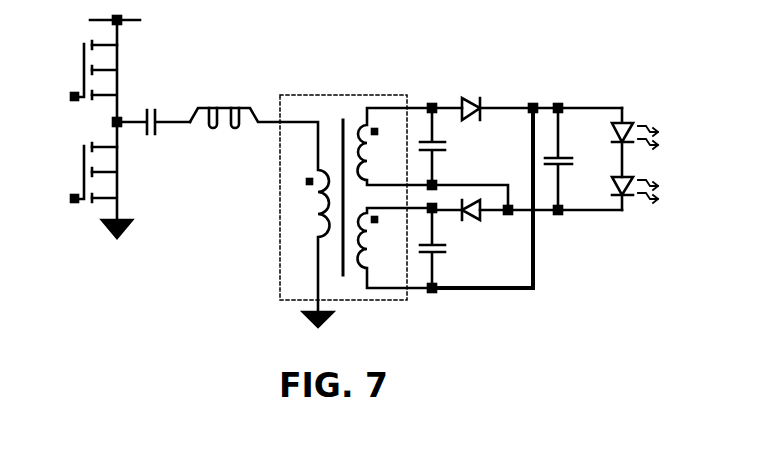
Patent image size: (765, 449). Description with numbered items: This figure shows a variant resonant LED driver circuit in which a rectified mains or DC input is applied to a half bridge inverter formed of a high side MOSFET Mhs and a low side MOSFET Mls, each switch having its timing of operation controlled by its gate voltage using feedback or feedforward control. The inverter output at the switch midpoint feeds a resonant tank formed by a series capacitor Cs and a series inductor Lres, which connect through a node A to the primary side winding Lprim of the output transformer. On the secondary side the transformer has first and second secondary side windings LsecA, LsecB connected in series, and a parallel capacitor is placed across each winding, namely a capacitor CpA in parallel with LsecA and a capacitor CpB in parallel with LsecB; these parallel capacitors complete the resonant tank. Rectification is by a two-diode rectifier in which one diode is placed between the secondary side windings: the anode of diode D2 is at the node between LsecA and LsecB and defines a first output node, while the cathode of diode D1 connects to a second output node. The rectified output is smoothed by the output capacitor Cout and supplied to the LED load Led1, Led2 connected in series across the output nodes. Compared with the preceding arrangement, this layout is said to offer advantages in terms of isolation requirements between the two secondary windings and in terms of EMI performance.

The high side MOSFET Mhs is at (98, 94).
The low side MOSFET Mls is at (95, 181).
The series capacitor Cs is at (153, 113).
The series inductor Lres is at (235, 110).
The node A is at (259, 111).
The primary side winding Lprim is at (297, 217).
The first secondary side winding LsecA is at (395, 146).
The second secondary side winding LsecB is at (395, 248).
The capacitor in parallel with LsecA CpA is at (441, 146).
The capacitor in parallel with LsecB CpB is at (442, 248).
The diode D1 is at (527, 100).
The diode D2 is at (527, 221).
The smoothing output capacitor Cout is at (569, 159).
The LED load Led1 is at (639, 142).
The LED load Led2 is at (639, 184).